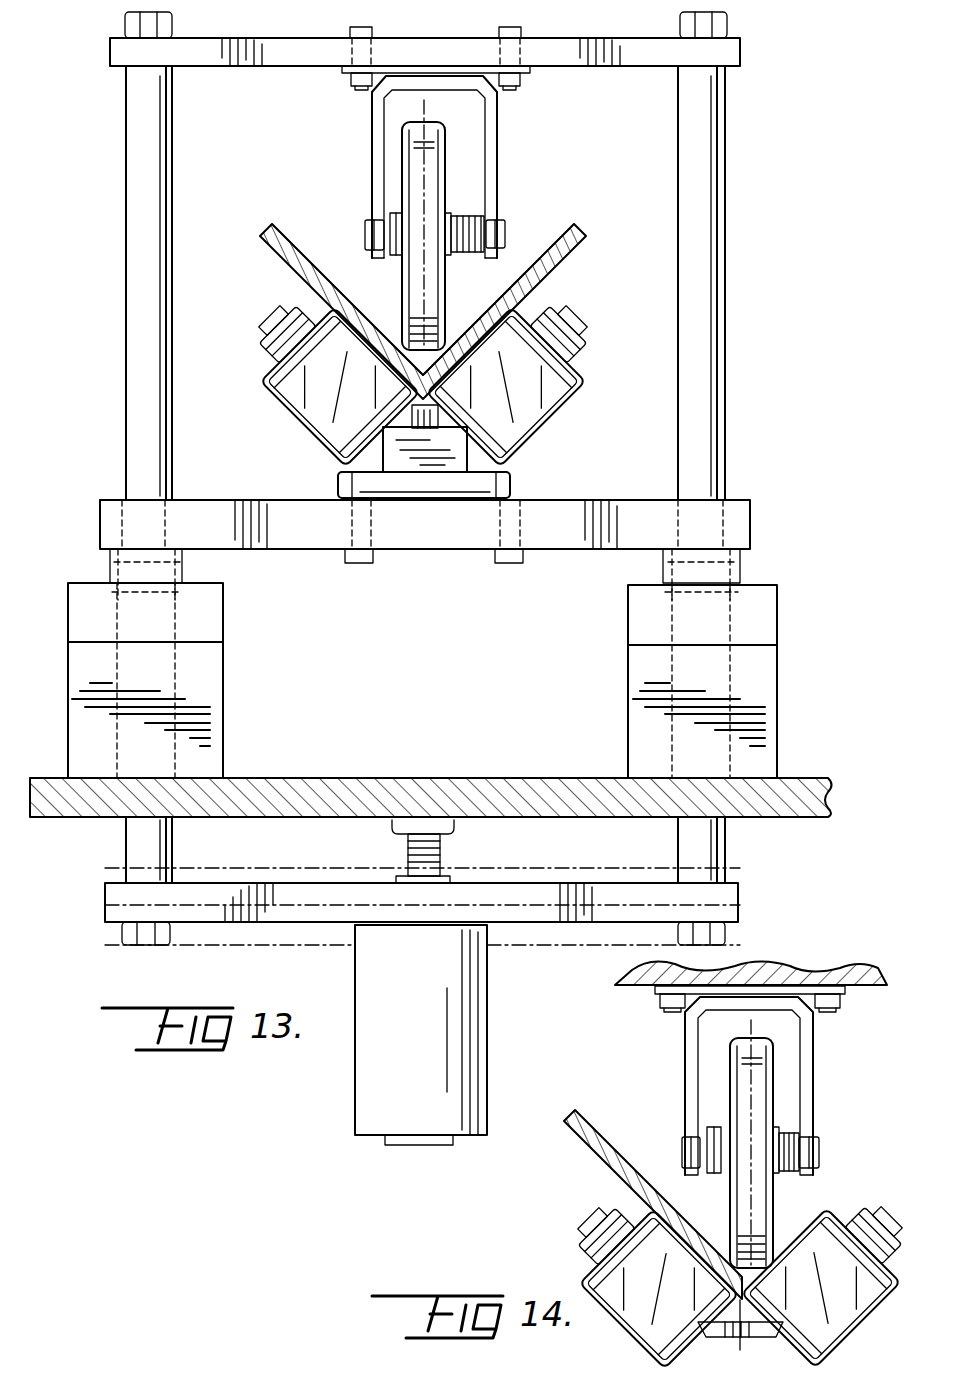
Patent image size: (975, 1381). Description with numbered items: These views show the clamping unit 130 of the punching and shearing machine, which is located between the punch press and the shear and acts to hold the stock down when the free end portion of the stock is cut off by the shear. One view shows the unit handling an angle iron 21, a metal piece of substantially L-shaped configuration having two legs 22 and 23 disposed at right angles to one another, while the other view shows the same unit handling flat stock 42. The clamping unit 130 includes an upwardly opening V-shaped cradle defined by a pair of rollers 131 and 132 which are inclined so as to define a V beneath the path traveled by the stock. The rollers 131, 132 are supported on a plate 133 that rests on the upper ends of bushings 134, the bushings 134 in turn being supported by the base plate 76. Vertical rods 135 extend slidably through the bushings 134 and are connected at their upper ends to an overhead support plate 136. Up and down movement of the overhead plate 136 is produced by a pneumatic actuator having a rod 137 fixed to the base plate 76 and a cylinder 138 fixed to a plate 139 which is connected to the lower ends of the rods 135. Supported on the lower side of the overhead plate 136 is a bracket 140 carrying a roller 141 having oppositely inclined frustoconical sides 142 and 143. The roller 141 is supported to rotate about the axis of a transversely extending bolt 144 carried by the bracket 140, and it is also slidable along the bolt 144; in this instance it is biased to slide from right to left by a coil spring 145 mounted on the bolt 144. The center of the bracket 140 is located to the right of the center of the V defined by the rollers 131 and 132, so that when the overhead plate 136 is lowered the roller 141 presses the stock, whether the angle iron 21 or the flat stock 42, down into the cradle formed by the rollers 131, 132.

In FIG. 13, the angle iron 21 is at (290, 282).
In FIG. 13, the leg 22 is at (300, 253).
In FIG. 13, the leg 23 is at (556, 246).
In FIG. 14, the flat stock 42 is at (612, 1115).
In FIG. 13, the base plate 76 is at (568, 782).
In FIG. 13, the clamping unit 130 is at (775, 42).
In FIG. 14, the clamping unit 130 is at (668, 1026).
In FIG. 13, the roller 131 is at (340, 405).
In FIG. 14, the roller 131 is at (690, 1285).
In FIG. 13, the roller 132 is at (506, 408).
In FIG. 14, the roller 132 is at (835, 1274).
In FIG. 13, the plate 133 is at (545, 510).
In FIG. 13, the bushings 134 is at (185, 563).
In FIG. 13, the vertical rods 135 is at (135, 345).
In FIG. 13, the overhead support plate 136 is at (575, 40).
In FIG. 14, the overhead support plate 136 is at (770, 968).
In FIG. 13, the rod 137 is at (440, 862).
In FIG. 13, the cylinder 138 is at (455, 993).
In FIG. 13, the plate 139 is at (296, 895).
In FIG. 13, the bracket 140 is at (512, 122).
In FIG. 14, the bracket 140 is at (822, 1038).
In FIG. 13, the roller 141 is at (400, 158).
In FIG. 14, the roller 141 is at (785, 1075).
In FIG. 13, the frustoconical side 142 is at (402, 280).
In FIG. 14, the frustoconical side 142 is at (733, 1205).
In FIG. 13, the frustoconical side 143 is at (437, 300).
In FIG. 14, the frustoconical side 143 is at (778, 1210).
In FIG. 13, the bolt 144 is at (370, 222).
In FIG. 14, the bolt 144 is at (688, 1138).
In FIG. 13, the coil spring 145 is at (465, 214).
In FIG. 14, the coil spring 145 is at (792, 1135).